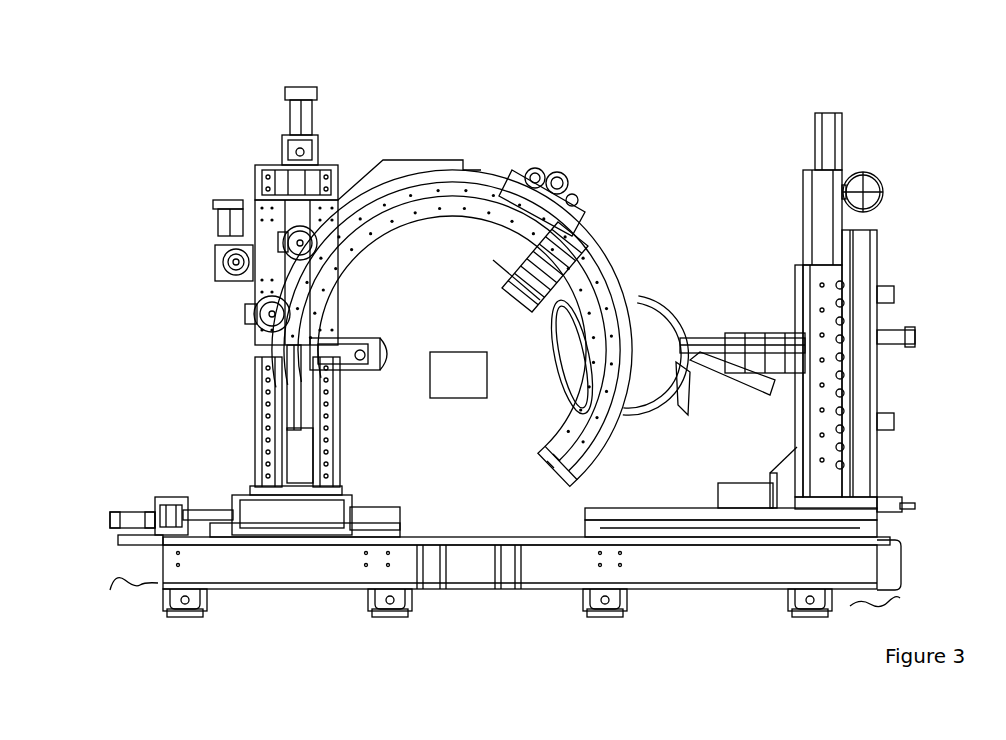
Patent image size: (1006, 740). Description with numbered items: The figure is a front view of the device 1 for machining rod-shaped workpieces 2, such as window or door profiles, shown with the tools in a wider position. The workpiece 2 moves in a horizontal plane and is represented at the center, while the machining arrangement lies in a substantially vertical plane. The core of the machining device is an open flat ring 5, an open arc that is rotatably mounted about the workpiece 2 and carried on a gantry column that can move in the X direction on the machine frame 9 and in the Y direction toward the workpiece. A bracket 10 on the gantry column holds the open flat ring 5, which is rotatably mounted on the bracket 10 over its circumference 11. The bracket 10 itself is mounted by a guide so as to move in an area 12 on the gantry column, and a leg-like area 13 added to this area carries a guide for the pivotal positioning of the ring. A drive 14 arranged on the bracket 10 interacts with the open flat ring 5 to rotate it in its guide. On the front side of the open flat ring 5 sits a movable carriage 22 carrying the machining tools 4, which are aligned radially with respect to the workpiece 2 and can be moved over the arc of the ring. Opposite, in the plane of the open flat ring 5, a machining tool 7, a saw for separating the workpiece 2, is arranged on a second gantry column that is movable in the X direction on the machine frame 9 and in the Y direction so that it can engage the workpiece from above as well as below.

The device 1 is at (690, 148).
The rod-shaped workpiece 2 is at (458, 375).
The tools 4 is at (363, 372).
The open flat ring 5 is at (400, 225).
The machining tool 7 is at (663, 298).
The machine frame 9 is at (657, 556).
The bracket 10 is at (345, 183).
The circumference 11 is at (477, 170).
The area 12 is at (257, 190).
The leg-like area 13 is at (402, 162).
The drive 14 is at (213, 243).
The movable carriage 22 is at (563, 163).